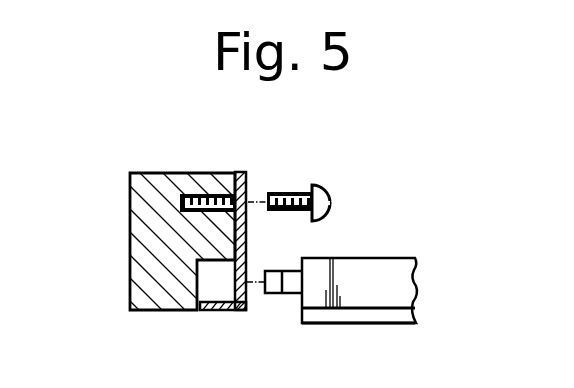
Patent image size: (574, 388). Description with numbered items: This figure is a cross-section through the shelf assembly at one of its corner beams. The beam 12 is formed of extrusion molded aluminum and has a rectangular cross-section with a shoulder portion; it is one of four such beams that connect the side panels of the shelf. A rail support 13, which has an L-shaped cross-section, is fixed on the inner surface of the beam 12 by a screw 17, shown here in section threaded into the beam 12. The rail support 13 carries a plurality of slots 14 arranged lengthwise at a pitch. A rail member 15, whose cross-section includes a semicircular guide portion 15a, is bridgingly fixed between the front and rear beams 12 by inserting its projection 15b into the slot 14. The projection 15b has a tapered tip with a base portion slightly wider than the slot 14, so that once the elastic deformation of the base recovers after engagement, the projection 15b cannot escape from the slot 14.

The beam 12 is at (130, 200).
The rail support 13 is at (222, 311).
The slot 14 is at (246, 282).
The rail member 15 is at (403, 268).
The semicircular guide portion 15a is at (382, 318).
The projection 15b is at (288, 294).
The screw 17 is at (300, 191).